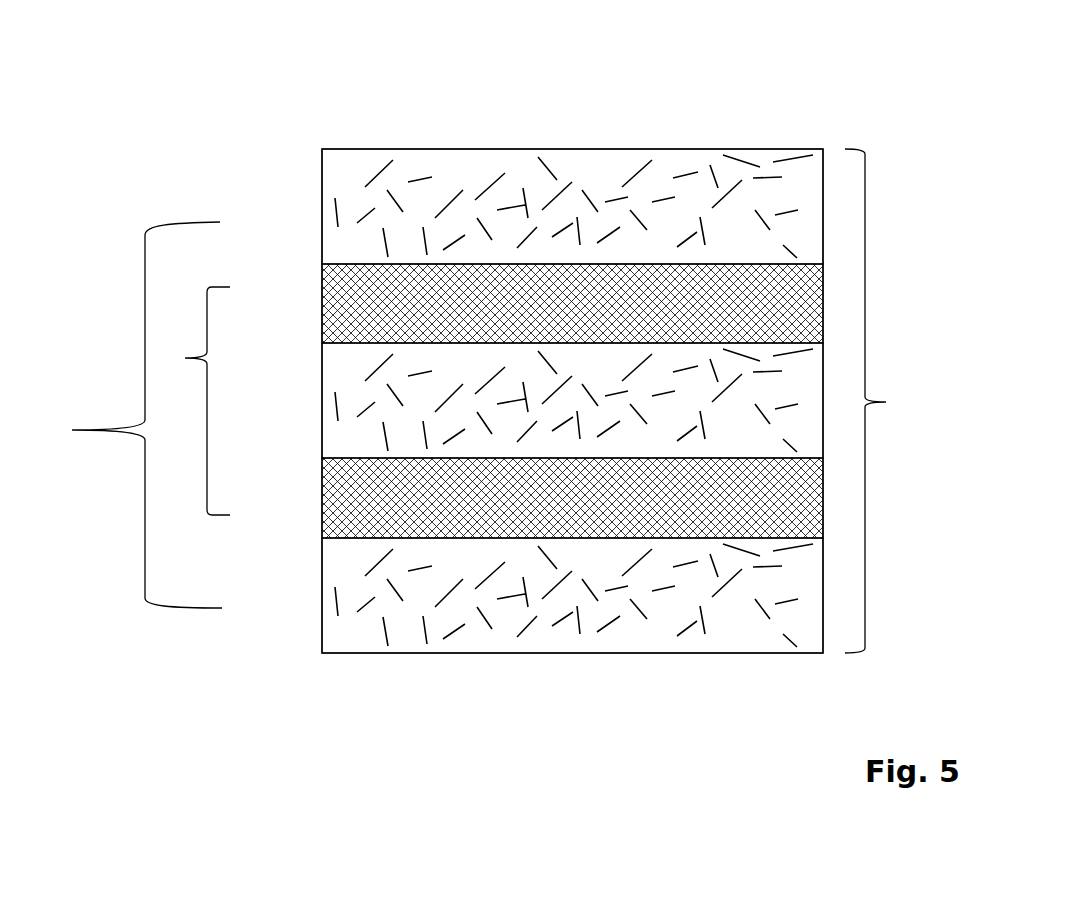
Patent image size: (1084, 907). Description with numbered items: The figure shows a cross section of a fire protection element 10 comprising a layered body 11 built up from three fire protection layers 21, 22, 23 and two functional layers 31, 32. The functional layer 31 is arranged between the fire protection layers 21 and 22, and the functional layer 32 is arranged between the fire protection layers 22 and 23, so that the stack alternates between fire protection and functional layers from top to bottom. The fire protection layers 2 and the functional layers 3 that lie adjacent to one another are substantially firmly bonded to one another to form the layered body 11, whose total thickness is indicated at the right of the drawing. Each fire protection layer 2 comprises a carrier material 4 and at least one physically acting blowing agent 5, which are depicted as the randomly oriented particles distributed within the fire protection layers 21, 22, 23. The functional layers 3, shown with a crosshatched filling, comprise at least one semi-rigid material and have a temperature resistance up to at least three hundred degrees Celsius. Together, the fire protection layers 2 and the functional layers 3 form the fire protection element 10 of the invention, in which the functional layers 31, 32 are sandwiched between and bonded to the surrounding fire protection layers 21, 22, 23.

The fire protection element 10 is at (553, 110).
The fire protection layers 2 is at (132, 415).
The functional layer 3 is at (195, 401).
The carrier material 4 is at (420, 165).
The physically acting blowing agent 5 is at (683, 170).
The layered body 11 is at (891, 401).
The first fire protection layer 21 is at (322, 149).
The second fire protection layer 22 is at (72, 430).
The third fire protection layer 23 is at (322, 538).
The first functional layer 31 is at (322, 343).
The second functional layer 32 is at (322, 458).